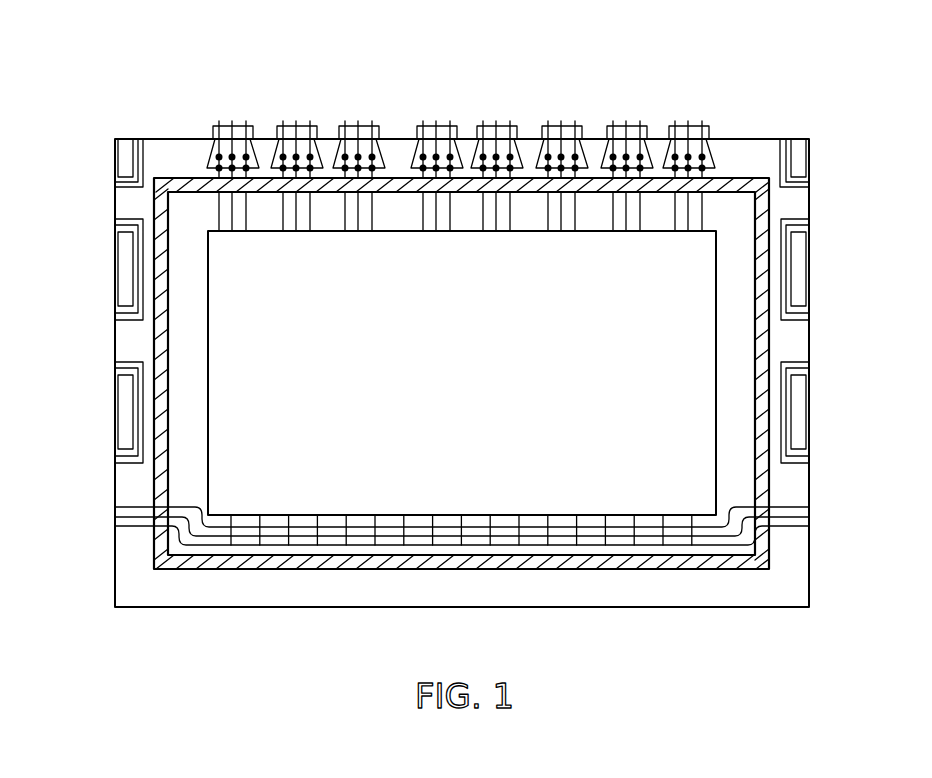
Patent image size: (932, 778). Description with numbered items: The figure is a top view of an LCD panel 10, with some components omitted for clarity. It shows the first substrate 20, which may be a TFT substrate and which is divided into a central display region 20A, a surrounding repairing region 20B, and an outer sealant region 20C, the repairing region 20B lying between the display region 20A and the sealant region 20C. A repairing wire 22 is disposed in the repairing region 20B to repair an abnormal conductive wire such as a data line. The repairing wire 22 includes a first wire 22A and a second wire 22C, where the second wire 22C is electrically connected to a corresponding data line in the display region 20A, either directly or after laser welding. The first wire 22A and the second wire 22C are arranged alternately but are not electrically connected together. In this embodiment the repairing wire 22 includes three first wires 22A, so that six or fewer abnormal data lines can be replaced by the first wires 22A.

The LCD panel 10 is at (828, 80).
The first substrate 20 is at (733, 139).
The display region 20A is at (473, 387).
The repairing region 20B is at (404, 210).
The sealant region 20C is at (185, 185).
The repairing wire 22 is at (287, 634).
The first wire 22A is at (193, 546).
The second wire 22C is at (259, 540).